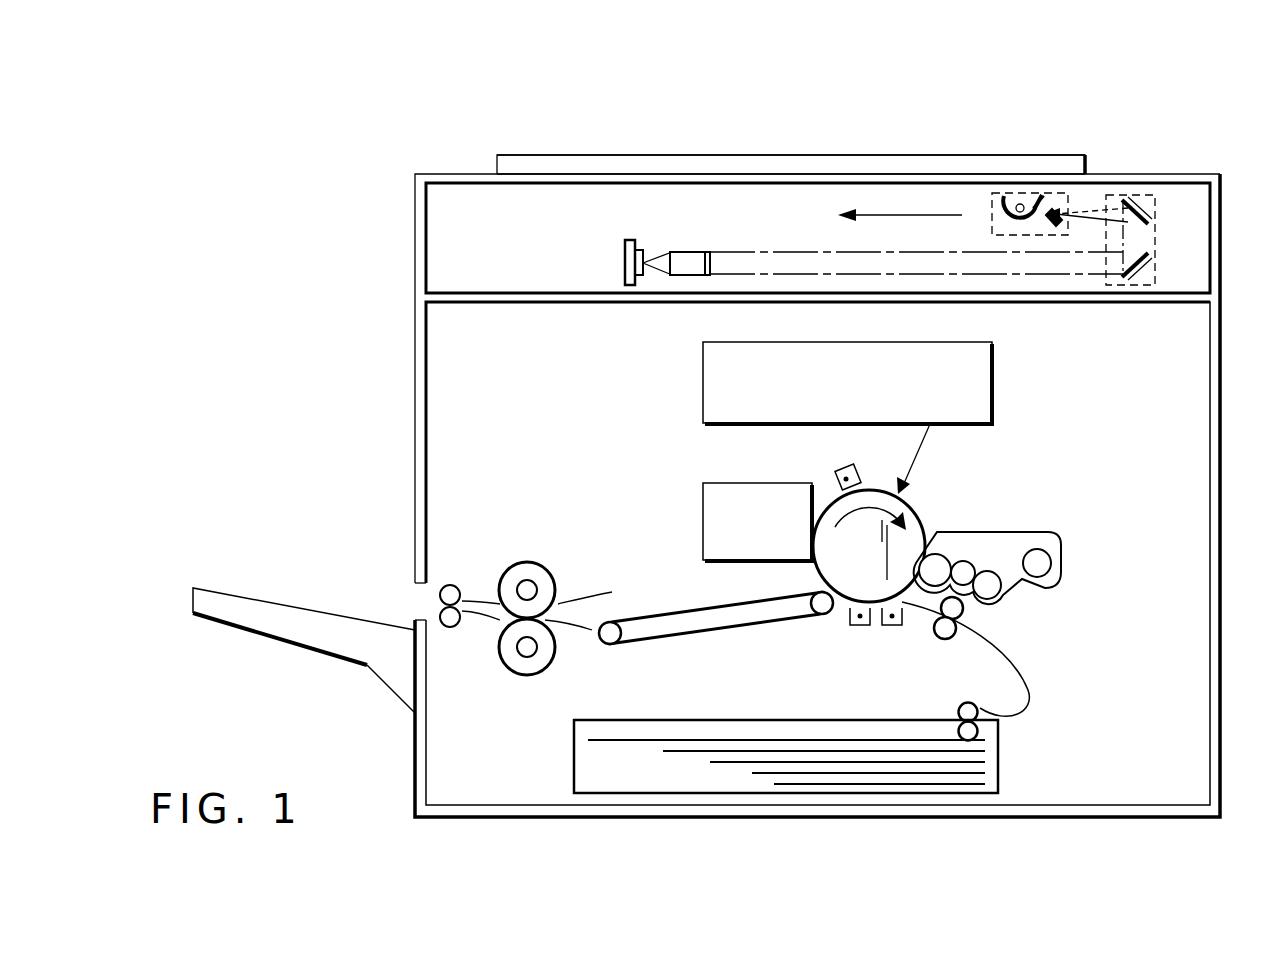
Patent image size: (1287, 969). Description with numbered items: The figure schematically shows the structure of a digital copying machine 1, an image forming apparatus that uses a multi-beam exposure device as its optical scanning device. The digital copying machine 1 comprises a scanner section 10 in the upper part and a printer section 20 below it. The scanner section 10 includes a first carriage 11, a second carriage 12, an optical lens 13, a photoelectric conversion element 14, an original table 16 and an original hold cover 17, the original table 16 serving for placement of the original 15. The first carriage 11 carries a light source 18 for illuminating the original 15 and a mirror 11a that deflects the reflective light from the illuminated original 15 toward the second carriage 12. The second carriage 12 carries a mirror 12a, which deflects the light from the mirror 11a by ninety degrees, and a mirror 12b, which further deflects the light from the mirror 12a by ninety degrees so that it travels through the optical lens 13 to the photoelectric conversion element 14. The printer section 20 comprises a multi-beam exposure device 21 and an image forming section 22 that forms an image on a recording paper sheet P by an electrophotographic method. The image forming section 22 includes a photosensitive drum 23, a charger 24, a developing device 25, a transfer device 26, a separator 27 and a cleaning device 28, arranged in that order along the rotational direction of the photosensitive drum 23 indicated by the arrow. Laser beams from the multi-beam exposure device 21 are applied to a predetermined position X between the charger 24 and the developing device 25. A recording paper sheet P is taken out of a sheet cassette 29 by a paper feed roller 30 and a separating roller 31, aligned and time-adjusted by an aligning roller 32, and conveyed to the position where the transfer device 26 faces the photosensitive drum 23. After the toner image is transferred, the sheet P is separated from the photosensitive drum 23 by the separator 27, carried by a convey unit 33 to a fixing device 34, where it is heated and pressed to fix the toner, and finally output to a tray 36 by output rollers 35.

The digital copying machine 1 is at (430, 147).
The scanner section 10 is at (437, 257).
The first carriage 11 is at (1000, 187).
The mirror 11a is at (1058, 212).
The second carriage 12 is at (1155, 273).
The mirror 12a is at (1150, 213).
The mirror 12b is at (1150, 262).
The optical lens 13 is at (697, 251).
The photoelectric conversion element 14 is at (622, 258).
The original 15 is at (888, 175).
The original table 16 is at (637, 181).
The original hold cover 17 is at (795, 167).
The light source 18 is at (1024, 204).
The printer section 20 is at (1222, 655).
The multi-beam exposure device 21 is at (994, 388).
The image forming section 22 is at (1044, 631).
The photosensitive drum 23 is at (920, 522).
The charger 24 is at (836, 478).
The developing device 25 is at (1040, 532).
The transfer device 26 is at (890, 630).
The separator 27 is at (855, 630).
The cleaning device 28 is at (703, 518).
The sheet cassette 29 is at (655, 782).
The paper feed roller 30 is at (980, 733).
The separating roller 31 is at (1031, 692).
The aligning roller 32 is at (945, 641).
The convey unit 33 is at (690, 638).
The fixing device 34 is at (524, 562).
The output rollers 35 is at (452, 628).
The tray 36 is at (314, 640).
The recording paper sheet P is at (835, 788).
The predetermined position X is at (907, 497).